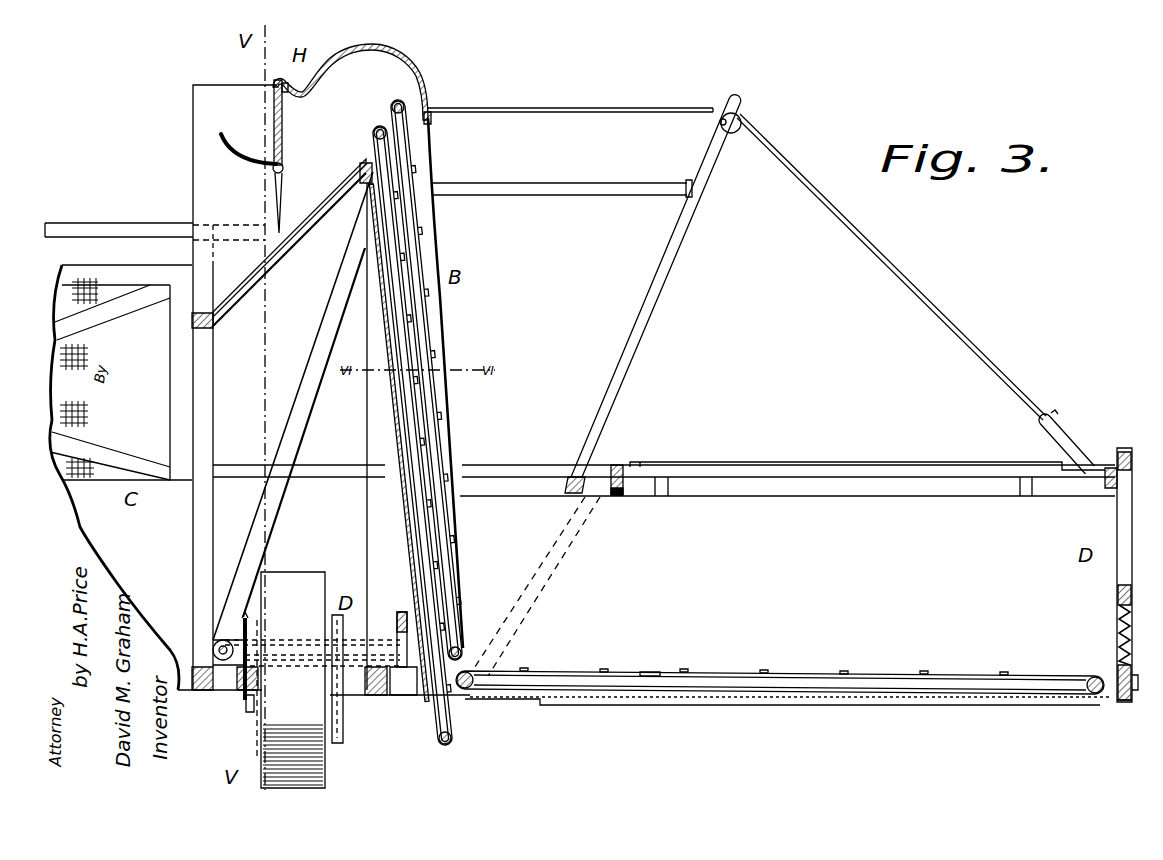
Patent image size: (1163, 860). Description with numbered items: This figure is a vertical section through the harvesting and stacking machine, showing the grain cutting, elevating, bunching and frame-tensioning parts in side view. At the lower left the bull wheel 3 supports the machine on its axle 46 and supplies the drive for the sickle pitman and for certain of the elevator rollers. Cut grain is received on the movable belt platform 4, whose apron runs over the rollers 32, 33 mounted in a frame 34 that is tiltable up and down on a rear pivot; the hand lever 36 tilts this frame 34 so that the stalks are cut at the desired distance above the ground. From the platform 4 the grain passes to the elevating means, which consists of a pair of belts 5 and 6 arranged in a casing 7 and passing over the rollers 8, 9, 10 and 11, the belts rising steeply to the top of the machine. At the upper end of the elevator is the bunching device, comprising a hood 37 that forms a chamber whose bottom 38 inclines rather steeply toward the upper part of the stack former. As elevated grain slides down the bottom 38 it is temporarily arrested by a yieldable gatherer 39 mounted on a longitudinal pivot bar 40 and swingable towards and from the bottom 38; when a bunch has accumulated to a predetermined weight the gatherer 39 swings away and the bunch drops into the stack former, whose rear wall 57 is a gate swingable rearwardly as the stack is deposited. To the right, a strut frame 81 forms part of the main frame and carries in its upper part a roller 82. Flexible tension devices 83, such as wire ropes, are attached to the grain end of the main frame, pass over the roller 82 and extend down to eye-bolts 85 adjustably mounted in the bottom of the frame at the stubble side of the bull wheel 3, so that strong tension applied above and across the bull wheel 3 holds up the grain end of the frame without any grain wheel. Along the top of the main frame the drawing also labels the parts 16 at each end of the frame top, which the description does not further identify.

The bull wheel 3 is at (318, 580).
The movable belt platform 4 is at (783, 692).
The elevator belt 5 is at (392, 387).
The elevator belt 6 is at (447, 414).
The casing 7 is at (405, 503).
The roller 8 is at (427, 439).
The roller 9 is at (418, 438).
The roller 10 is at (466, 654).
The roller 11 is at (443, 371).
The lid block 16 is at (618, 465).
The platform apron roller 32 is at (783, 700).
The platform apron roller 33 is at (1094, 696).
The frame 34 is at (403, 697).
The hand lever 36 is at (402, 612).
The hood 37 is at (366, 49).
The bottom 38 is at (262, 262).
The yieldable gatherer 39 is at (284, 208).
The longitudinal pivot bar 40 is at (288, 90).
The axle 46 is at (378, 697).
The rear wall 57 is at (98, 378).
The strut frame 81 is at (702, 186).
The roller 82 is at (737, 134).
The flexible tension device 83 is at (600, 109).
The eye-bolt 85 is at (250, 640).